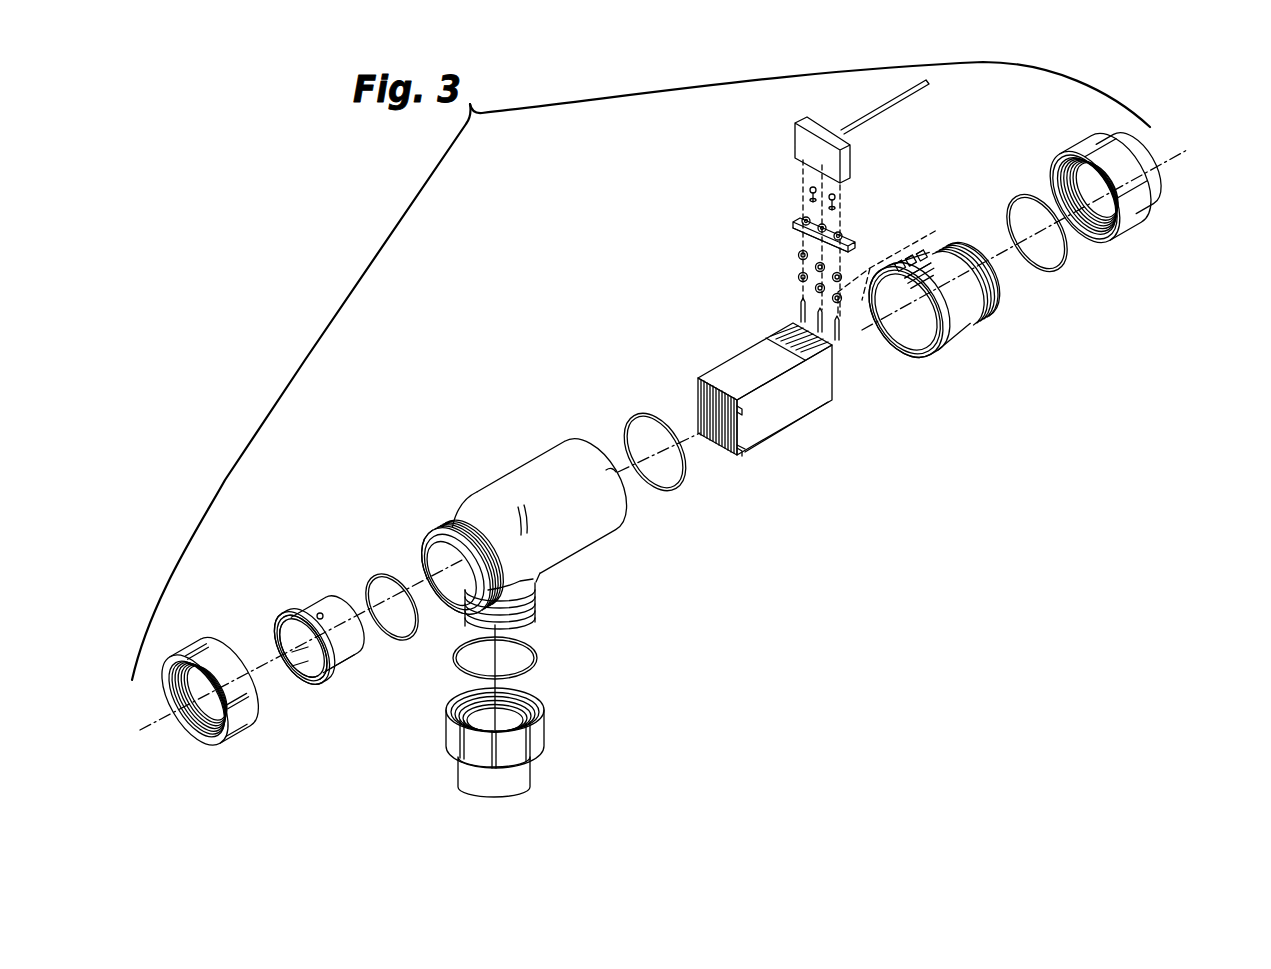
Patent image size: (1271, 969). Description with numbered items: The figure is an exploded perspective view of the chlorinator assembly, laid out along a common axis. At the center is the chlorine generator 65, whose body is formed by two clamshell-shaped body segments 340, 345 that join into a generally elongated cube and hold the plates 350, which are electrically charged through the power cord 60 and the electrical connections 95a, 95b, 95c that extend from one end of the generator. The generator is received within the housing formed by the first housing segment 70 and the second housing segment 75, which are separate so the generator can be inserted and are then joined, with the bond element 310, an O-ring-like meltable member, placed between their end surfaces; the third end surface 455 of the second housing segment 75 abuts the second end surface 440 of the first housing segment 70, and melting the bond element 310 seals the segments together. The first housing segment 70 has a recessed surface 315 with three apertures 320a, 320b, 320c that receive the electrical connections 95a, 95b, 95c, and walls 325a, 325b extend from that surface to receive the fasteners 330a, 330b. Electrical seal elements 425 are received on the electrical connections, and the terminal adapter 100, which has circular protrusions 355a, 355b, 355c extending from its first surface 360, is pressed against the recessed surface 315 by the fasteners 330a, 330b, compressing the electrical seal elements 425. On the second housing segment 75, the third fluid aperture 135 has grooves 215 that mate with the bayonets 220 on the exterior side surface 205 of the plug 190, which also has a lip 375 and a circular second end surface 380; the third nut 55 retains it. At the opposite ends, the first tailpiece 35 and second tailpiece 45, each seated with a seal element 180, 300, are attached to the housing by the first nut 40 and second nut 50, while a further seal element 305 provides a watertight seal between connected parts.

The first tailpiece 35 is at (1168, 195).
The first nut 40 is at (1125, 248).
The second tailpiece 45 is at (520, 783).
The second nut 50 is at (537, 737).
The third nut 55 is at (237, 737).
The power cord 60 is at (885, 87).
The chlorine generator 65 is at (748, 452).
The first housing segment 70 is at (965, 340).
The second housing segment 75 is at (551, 570).
The electrical connection 95a is at (825, 410).
The electrical connection 95b is at (835, 375).
The electrical connection 95c is at (845, 335).
The terminal adapter 100 is at (796, 228).
The third fluid aperture 135 is at (415, 578).
The seal element 180 is at (1041, 192).
The plug 190 is at (352, 666).
The exterior side surface 205 is at (323, 612).
The grooves 215 is at (425, 557).
The bayonets 220 is at (316, 617).
The seal element 300 is at (537, 668).
The seal element 305 is at (381, 640).
The bond element 310 is at (686, 490).
The recessed surface 315 is at (945, 323).
The aperture 320a is at (930, 250).
The aperture 320b is at (945, 258).
The aperture 320c is at (1007, 307).
The wall 325a is at (937, 245).
The wall 325b is at (1017, 276).
The fastener 330a is at (810, 188).
The fastener 330b is at (836, 200).
The body segment 340 is at (748, 362).
The body segment 345 is at (800, 430).
The plates 350 is at (699, 405).
The circular protrusion 355a is at (805, 220).
The circular protrusion 355b is at (838, 232).
The circular protrusion 355c is at (848, 246).
The first surface 360 is at (790, 230).
The lip 375 is at (333, 683).
The second end surface 380 is at (297, 638).
The electrical seal elements 425 is at (797, 277).
The second end surface 440 is at (960, 335).
The third end surface 455 is at (625, 480).